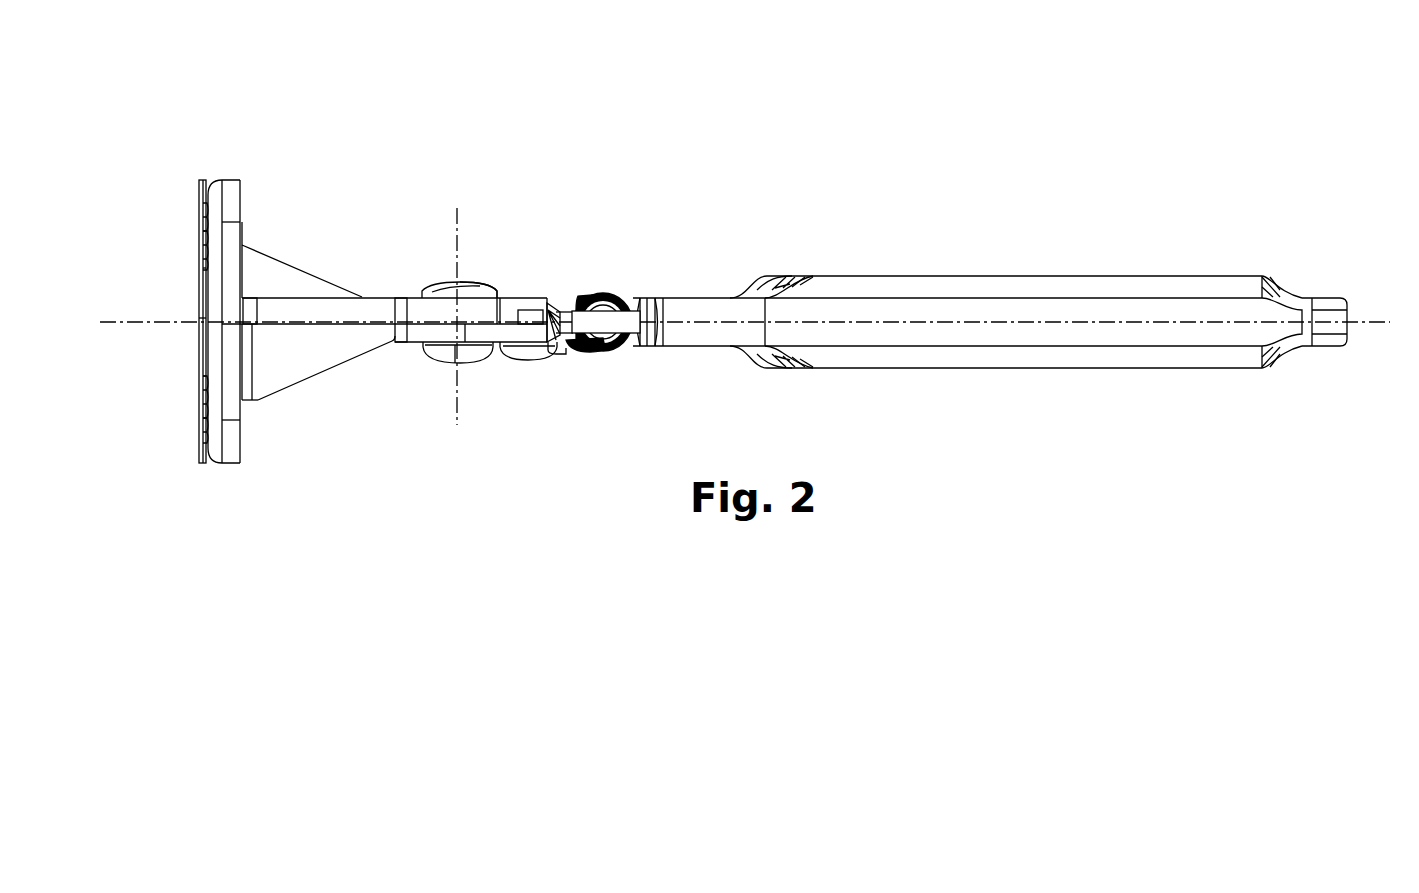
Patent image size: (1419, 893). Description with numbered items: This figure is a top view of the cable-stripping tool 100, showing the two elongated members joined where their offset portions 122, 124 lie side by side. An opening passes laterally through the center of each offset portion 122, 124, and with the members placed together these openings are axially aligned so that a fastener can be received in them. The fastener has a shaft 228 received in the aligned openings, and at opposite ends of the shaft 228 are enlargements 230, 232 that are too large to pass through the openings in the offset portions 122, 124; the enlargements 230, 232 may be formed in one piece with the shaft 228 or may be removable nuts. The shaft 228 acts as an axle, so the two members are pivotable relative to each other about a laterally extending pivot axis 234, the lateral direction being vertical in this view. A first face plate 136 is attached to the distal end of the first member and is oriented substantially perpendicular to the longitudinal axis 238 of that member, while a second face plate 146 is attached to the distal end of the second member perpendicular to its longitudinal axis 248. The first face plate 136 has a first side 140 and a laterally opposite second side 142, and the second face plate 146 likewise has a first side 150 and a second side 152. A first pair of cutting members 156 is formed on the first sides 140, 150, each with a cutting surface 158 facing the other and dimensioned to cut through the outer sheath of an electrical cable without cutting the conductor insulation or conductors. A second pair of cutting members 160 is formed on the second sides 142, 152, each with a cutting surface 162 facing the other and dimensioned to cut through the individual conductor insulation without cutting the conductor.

The instrument 100 is at (1022, 232).
The offset portion 122 is at (398, 349).
The offset portion 124 is at (416, 286).
The first face plate 136 is at (198, 180).
The first side 140 is at (129, 321).
The first side 150 is at (196, 346).
The second side 142 is at (127, 311).
The second side 152 is at (196, 272).
The second face plate 146 is at (228, 442).
The first pair of cutting members 156 is at (196, 410).
The cutting surface 158 is at (197, 437).
The second pair of cutting members 160 is at (196, 227).
The cutting surface 162 is at (197, 208).
The shaft 228 is at (485, 296).
The enlargement 230 is at (480, 361).
The enlargement 232 is at (481, 315).
The pivot axis 234 is at (457, 218).
The longitudinal axis 238 is at (1337, 280).
The longitudinal axis 248 is at (1381, 322).